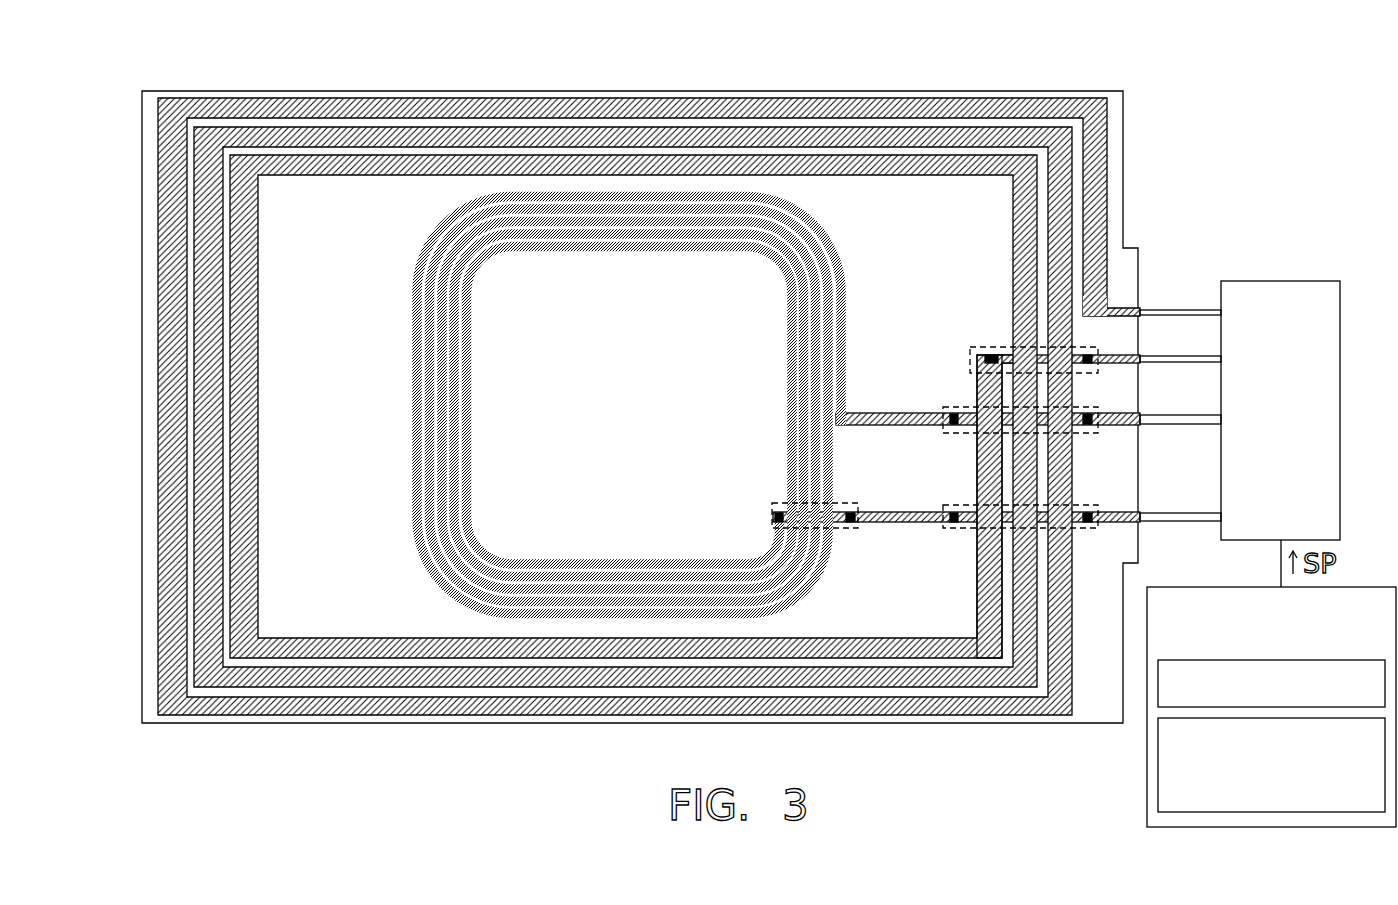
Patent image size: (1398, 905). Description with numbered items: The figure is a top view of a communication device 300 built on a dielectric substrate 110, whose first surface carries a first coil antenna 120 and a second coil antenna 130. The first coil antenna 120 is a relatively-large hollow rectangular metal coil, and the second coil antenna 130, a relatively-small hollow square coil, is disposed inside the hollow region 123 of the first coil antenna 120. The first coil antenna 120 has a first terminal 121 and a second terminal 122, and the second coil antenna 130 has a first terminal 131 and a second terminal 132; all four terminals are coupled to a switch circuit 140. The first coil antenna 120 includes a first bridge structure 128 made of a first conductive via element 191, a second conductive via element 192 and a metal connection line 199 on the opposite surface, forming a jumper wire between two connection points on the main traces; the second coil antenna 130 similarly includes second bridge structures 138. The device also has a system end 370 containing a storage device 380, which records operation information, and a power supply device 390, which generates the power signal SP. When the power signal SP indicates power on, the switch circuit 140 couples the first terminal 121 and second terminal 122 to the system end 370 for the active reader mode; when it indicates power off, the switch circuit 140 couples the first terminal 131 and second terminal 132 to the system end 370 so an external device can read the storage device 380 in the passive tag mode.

The communication device 300 is at (165, 47).
The dielectric substrate 110 is at (142, 158).
The first coil antenna 120 is at (627, 117).
The first terminal 121 is at (1140, 312).
The second terminal 122 is at (1140, 358).
The hollow region 123 is at (905, 213).
The first bridge structure 128 is at (985, 348).
The second coil antenna 130 is at (412, 410).
The first terminal 131 is at (1140, 419).
The second terminal 132 is at (1140, 517).
The second bridge structure 138 is at (950, 434).
The switch circuit 140 is at (1281, 280).
The first conductive via element 191 is at (990, 352).
The second conductive via element 192 is at (1105, 302).
The metal connection line 199 is at (1040, 346).
The system end 370 is at (1147, 588).
The storage device 380 is at (1158, 664).
The power supply device 390 is at (1158, 770).